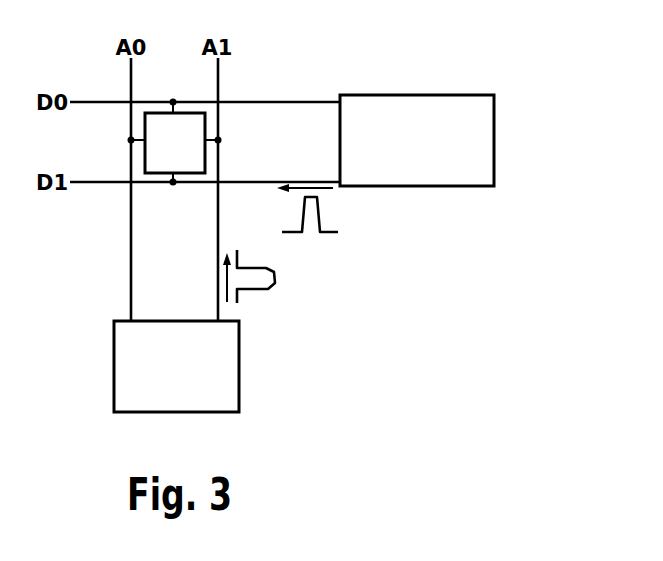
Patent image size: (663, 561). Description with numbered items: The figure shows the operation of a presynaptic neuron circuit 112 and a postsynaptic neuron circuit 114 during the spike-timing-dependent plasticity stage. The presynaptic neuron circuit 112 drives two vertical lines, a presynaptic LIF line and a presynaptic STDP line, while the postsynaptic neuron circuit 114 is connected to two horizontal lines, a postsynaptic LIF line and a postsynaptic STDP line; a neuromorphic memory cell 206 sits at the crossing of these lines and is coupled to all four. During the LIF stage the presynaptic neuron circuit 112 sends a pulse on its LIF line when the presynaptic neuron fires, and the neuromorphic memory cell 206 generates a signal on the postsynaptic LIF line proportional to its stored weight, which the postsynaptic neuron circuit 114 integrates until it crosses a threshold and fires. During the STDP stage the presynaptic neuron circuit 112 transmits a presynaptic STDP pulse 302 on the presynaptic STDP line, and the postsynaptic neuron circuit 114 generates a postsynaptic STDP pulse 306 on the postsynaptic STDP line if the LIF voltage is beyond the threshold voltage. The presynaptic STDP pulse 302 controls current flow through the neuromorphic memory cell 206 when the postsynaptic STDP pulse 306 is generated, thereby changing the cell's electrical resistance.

The presynaptic neuron circuit 112 is at (114, 363).
The postsynaptic neuron circuit 114 is at (496, 132).
The neuromorphic memory cell 206 is at (175, 142).
The presynaptic STDP pulse 302 is at (252, 292).
The postsynaptic STDP pulse 306 is at (328, 233).